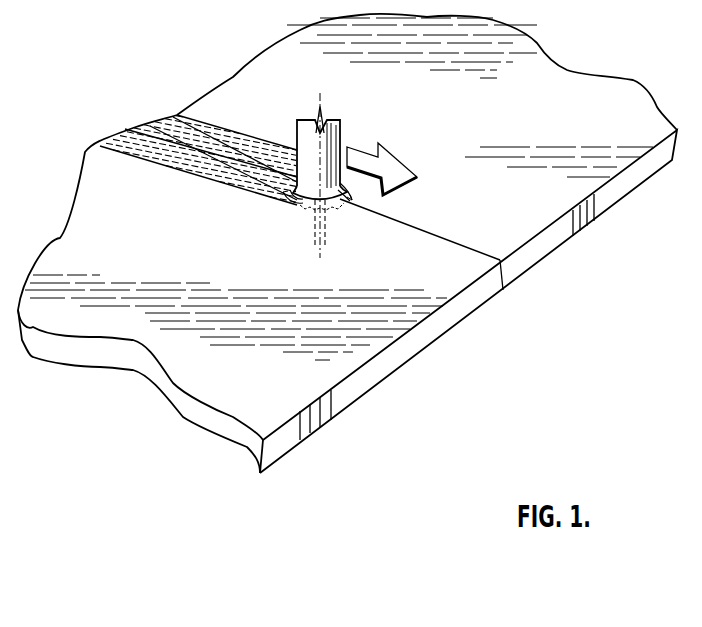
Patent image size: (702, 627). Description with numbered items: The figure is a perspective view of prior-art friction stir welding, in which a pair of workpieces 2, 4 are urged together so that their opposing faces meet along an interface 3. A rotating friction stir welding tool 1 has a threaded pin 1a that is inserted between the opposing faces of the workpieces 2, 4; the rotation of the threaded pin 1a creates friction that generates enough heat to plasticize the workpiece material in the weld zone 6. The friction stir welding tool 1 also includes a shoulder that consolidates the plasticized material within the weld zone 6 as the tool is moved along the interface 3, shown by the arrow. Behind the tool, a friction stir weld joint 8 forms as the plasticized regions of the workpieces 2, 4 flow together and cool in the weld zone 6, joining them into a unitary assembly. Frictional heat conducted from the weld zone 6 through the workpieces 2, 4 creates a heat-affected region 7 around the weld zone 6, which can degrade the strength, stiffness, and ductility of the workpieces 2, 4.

The friction stir welding tool 1 is at (338, 203).
The threaded pin 1a is at (318, 240).
The workpiece 2 is at (443, 277).
The interface 3 is at (422, 228).
The workpiece 4 is at (520, 223).
The weld zone 6 is at (302, 200).
The heat-affected region 7 is at (240, 123).
The friction stir weld joint 8 is at (228, 155).